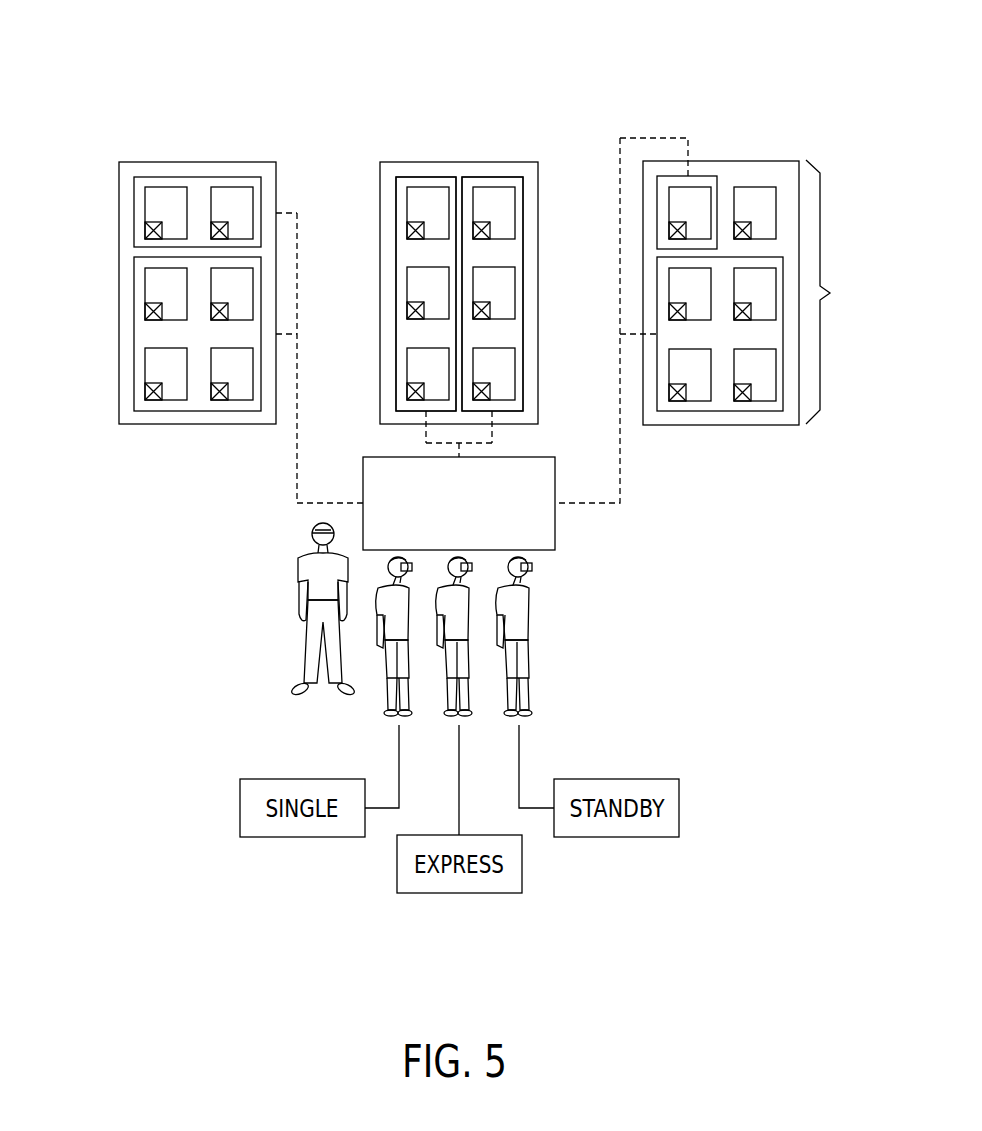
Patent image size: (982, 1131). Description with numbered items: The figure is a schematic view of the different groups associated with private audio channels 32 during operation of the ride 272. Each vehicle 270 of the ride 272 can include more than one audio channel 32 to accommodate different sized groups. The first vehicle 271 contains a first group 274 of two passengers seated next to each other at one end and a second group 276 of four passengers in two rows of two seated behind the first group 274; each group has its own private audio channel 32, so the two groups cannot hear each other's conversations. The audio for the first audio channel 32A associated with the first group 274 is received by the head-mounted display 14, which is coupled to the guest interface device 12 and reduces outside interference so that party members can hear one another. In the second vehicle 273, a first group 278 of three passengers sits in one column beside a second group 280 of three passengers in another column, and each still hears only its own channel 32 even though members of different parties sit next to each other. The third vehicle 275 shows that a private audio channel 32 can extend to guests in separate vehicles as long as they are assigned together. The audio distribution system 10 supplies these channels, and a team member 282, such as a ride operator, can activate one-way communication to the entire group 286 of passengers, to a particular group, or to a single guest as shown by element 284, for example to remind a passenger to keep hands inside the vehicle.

The audio distribution system 10 is at (522, 457).
The guest interface device 12 is at (382, 697).
The head-mounted display 14 is at (152, 400).
The private audio channel 32 is at (657, 235).
The first audio channel 32A is at (396, 290).
The vehicle 270 is at (232, 125).
The first vehicle 271 is at (196, 162).
The ride 272 is at (155, 45).
The second vehicle 273 is at (457, 162).
The first group of the first vehicle 274 is at (134, 212).
The third vehicle 275 is at (720, 161).
The second group of the first vehicle 276 is at (134, 333).
The first group in vehicle 2 278 is at (396, 226).
The second group in vehicle 2 280 is at (522, 225).
The team member 282 is at (300, 540).
The single guest 284 is at (657, 195).
The entire group 286 is at (841, 292).